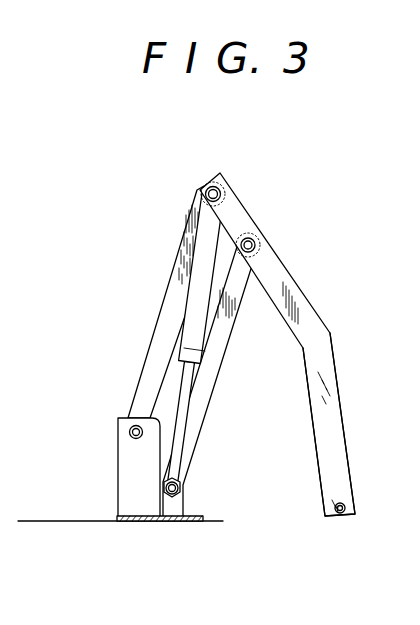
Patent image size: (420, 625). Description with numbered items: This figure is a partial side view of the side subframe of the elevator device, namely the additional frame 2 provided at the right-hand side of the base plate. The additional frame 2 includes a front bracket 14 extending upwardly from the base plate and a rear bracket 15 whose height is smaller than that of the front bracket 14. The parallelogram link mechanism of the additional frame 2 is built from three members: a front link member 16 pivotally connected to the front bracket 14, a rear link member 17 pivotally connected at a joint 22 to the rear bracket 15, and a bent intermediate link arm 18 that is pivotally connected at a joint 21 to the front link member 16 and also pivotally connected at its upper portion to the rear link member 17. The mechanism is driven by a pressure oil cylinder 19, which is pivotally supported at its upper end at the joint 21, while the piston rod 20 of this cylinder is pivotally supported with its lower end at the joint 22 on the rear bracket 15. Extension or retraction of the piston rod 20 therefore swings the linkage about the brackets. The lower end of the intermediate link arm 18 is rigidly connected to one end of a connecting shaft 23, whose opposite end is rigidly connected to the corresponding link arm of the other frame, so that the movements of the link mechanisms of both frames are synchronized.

The additional frame 2 is at (286, 272).
The front bracket 14 is at (128, 460).
The rear bracket 15 is at (175, 521).
The front link member 16 is at (168, 298).
The rear link member 17 is at (218, 378).
The bent intermediate link arm 18 is at (307, 310).
The pressure oil cylinder 19 is at (205, 330).
The piston rod 20 is at (192, 378).
The joint 21 is at (212, 187).
The joint 22 is at (180, 488).
The connecting shaft 23 is at (347, 505).